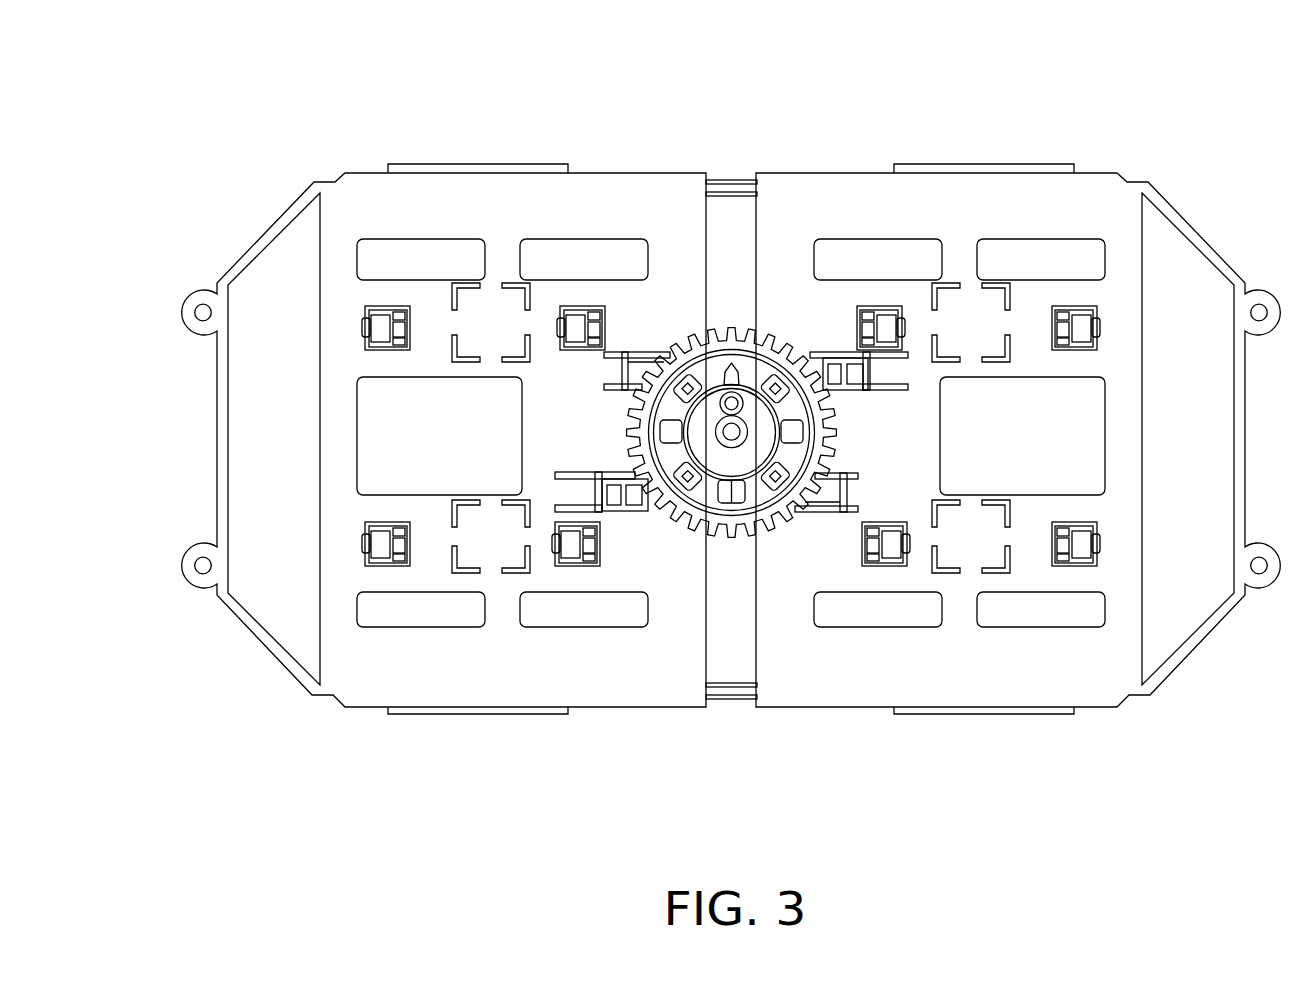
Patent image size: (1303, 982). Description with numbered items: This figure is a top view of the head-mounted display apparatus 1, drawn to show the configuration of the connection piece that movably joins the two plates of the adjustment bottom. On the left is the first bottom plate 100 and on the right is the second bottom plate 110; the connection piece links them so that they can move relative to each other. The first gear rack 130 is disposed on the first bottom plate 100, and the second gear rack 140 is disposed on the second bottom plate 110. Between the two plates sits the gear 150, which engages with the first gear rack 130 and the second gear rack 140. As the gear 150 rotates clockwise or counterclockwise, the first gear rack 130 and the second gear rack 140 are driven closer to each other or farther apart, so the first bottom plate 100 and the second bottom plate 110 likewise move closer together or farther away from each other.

The head-mounted display apparatus 1 is at (135, 75).
The first bottom plate 100 is at (477, 203).
The second bottom plate 110 is at (985, 203).
The first gear rack 130 is at (640, 512).
The second gear rack 140 is at (832, 351).
The gear 150 is at (737, 312).